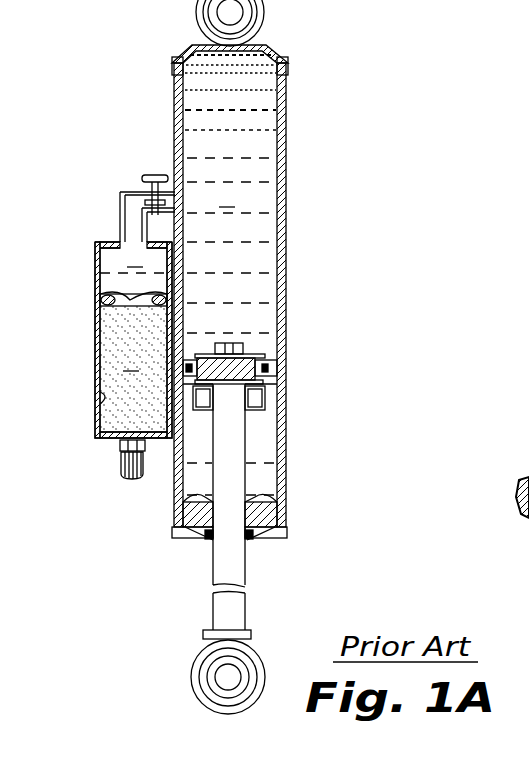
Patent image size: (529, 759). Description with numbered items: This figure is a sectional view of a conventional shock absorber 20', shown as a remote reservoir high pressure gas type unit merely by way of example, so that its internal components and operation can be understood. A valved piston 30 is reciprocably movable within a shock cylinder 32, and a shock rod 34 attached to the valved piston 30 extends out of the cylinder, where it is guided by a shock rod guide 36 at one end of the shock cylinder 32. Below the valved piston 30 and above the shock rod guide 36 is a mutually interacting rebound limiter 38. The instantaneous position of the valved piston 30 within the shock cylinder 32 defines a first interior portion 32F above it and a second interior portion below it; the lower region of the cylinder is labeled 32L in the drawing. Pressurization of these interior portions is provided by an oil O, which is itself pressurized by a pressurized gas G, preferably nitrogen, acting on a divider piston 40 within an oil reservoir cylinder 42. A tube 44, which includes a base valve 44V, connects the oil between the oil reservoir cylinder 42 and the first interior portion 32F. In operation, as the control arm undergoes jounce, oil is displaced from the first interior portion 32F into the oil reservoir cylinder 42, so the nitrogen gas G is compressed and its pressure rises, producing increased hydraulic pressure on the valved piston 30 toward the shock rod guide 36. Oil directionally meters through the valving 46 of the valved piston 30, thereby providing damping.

The conventional shock absorber 20' is at (191, 357).
The first interior portion 32F is at (268, 174).
The valving 46 is at (258, 360).
The valved piston 30 is at (195, 355).
The shock rod 34 is at (246, 452).
The shock cylinder 32 is at (270, 400).
The lower tube portion 32L is at (262, 436).
The shock rod guide 36 is at (262, 545).
The rebound limiter 38 is at (197, 497).
The divider piston 40 is at (112, 306).
The oil reservoir cylinder 42 is at (100, 402).
The tube 44 is at (138, 192).
The base valve 44V is at (143, 208).
The oil O is at (276, 389).
The pressurized gas G is at (133, 362).